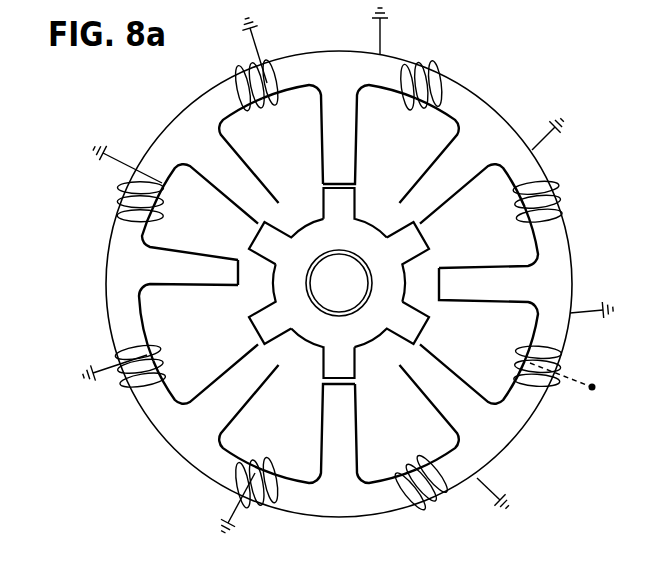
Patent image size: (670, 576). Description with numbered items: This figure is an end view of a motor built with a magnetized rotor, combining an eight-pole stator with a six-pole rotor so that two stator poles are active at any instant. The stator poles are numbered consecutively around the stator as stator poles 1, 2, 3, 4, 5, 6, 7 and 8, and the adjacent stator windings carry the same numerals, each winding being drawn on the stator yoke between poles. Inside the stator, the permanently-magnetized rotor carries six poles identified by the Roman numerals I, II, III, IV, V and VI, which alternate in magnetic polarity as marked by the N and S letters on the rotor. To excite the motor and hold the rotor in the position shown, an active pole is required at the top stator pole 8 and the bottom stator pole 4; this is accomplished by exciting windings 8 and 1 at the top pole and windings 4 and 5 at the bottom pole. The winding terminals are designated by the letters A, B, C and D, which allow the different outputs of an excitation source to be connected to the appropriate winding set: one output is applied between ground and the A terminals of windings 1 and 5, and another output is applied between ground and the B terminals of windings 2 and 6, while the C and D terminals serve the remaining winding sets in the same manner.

The stator pole 1 is at (444, 179).
The stator pole 2 is at (488, 284).
The stator pole 3 is at (444, 389).
The stator pole 4 is at (339, 433).
The stator pole 5 is at (234, 389).
The stator pole 6 is at (188, 284).
The stator pole 7 is at (234, 179).
The stator pole 8 is at (339, 134).
The rotor pole I is at (355, 213).
The rotor pole II is at (408, 262).
The rotor pole III is at (391, 332).
The rotor pole IV is at (322, 355).
The rotor pole V is at (270, 304).
The rotor pole VI is at (286, 234).
The winding terminal A is at (420, 100).
The winding terminal B is at (530, 215).
The winding terminal C is at (117, 225).
The winding terminal D is at (208, 92).